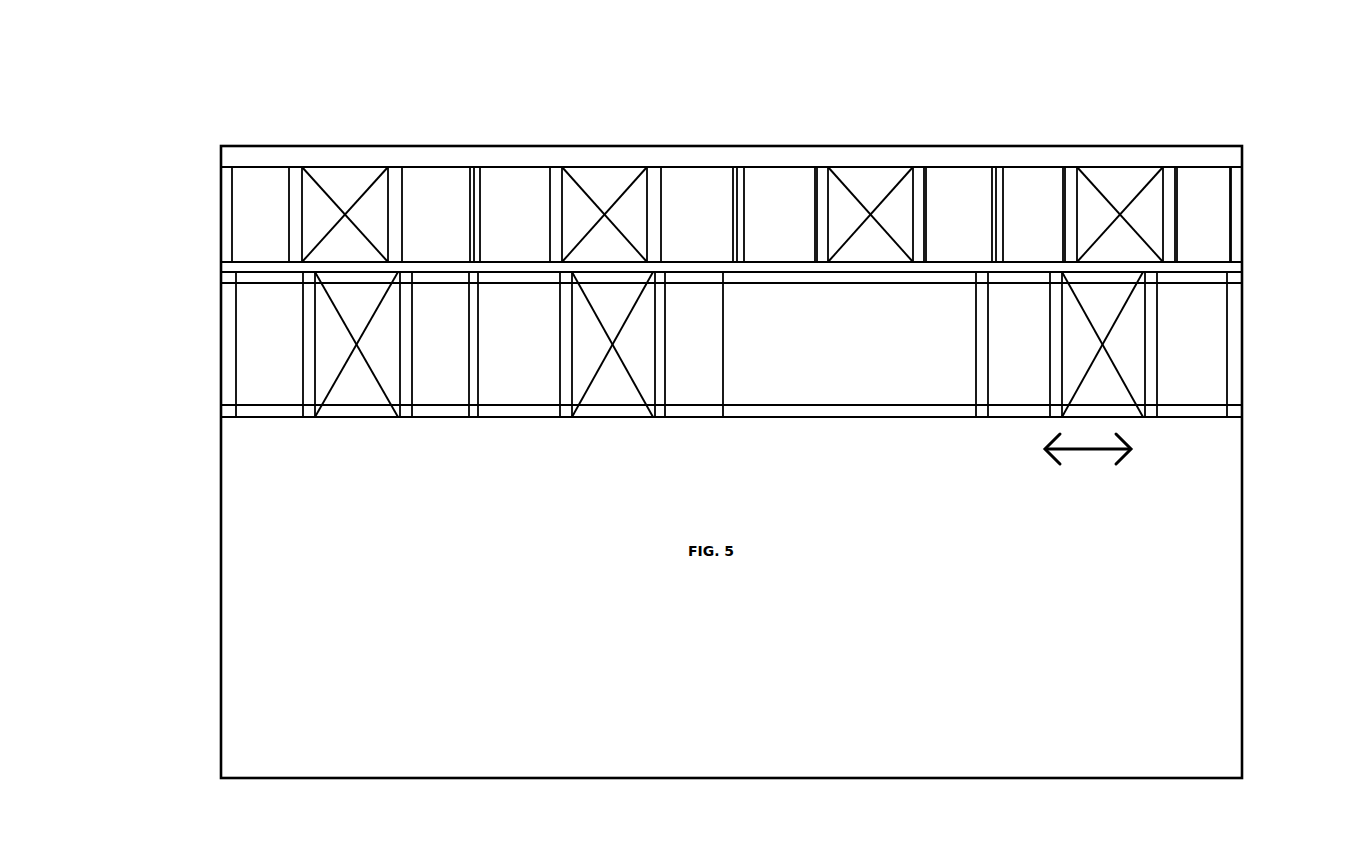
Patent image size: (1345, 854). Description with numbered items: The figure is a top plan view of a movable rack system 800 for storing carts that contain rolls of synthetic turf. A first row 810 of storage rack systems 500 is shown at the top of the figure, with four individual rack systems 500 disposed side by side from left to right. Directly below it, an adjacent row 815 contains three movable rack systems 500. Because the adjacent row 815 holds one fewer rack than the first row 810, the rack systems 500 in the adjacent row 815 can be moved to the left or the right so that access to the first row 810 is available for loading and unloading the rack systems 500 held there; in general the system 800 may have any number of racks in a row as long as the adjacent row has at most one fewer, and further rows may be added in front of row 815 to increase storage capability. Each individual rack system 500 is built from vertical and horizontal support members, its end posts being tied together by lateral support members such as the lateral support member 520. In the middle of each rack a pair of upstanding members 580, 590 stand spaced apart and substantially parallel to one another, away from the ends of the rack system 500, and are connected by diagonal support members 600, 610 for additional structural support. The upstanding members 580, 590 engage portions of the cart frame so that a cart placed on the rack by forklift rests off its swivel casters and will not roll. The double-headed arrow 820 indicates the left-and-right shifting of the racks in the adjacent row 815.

The movable rack system 800 is at (723, 92).
The first row 810 is at (203, 148).
The adjacent row 815 is at (203, 275).
The storage rack system 500 is at (301, 165).
The lateral support member 520 is at (1233, 213).
The upstanding member 580 is at (920, 197).
The upstanding member 590 is at (818, 193).
The diagonal support member 600 is at (850, 187).
The diagonal support member 610 is at (890, 183).
The bay width 820 is at (1088, 453).